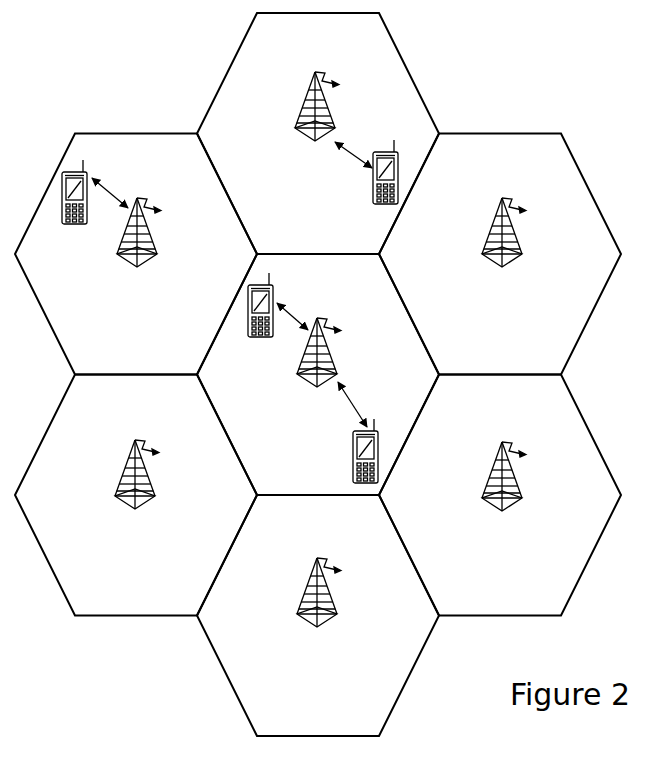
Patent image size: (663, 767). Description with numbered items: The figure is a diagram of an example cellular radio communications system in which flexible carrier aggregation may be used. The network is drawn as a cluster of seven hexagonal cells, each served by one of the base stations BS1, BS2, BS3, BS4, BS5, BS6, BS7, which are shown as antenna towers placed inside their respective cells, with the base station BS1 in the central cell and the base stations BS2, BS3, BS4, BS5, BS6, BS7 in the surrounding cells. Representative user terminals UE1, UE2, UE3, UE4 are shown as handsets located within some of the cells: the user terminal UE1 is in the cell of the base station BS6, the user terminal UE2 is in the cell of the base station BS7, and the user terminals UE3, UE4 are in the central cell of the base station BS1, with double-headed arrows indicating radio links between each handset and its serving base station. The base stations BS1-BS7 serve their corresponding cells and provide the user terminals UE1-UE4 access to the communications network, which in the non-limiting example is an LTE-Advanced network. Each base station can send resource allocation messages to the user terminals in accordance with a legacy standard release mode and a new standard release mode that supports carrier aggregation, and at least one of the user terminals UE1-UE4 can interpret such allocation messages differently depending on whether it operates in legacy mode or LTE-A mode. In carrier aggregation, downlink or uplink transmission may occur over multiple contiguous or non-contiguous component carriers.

The base station BS1 is at (315, 366).
The base station BS2 is at (504, 250).
The base station BS3 is at (504, 491).
The base station BS4 is at (319, 610).
The base station BS5 is at (137, 491).
The base station BS6 is at (139, 249).
The base station BS7 is at (298, 109).
The user terminal UE1 is at (64, 205).
The user terminal UE2 is at (370, 186).
The user terminal UE3 is at (340, 453).
The user terminal UE4 is at (255, 320).